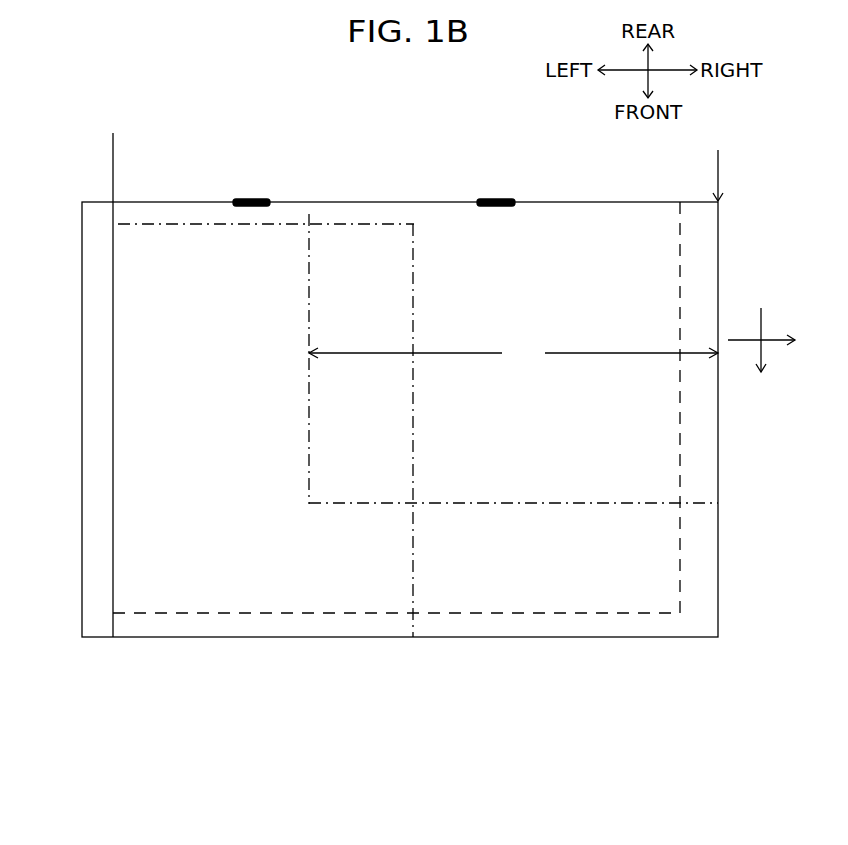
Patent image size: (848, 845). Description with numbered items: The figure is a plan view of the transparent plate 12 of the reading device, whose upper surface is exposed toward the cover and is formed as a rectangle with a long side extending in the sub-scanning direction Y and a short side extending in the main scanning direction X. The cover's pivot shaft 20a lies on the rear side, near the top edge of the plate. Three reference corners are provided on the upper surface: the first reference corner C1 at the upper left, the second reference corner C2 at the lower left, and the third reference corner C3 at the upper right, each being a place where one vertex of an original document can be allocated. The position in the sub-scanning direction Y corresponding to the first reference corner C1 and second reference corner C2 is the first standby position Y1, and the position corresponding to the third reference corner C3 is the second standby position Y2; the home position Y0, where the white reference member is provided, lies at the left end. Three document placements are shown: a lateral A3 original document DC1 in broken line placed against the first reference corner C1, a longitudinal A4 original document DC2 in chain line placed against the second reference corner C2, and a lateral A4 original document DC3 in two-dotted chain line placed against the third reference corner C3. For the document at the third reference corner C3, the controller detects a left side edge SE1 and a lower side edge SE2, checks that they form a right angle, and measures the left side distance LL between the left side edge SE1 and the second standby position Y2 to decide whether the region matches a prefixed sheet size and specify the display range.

The transparent plate 12 is at (540, 245).
The pivot shaft 20a is at (495, 201).
The home position Y0 is at (95, 201).
The first standby position Y1 is at (114, 373).
The second standby position Y2 is at (717, 163).
The first reference corner C1 is at (116, 202).
The second reference corner C2 is at (115, 638).
The third reference corner C3 is at (720, 202).
The left side distance LL is at (513, 354).
The left side edge SE1 is at (309, 397).
The lower side edge SE2 is at (625, 505).
The lateral A3 original document DC1 is at (535, 612).
The longitudinal A4 original document DC2 is at (416, 584).
The lateral A4 original document DC3 is at (502, 505).
The main scanning direction X is at (760, 357).
The sub-scanning direction Y is at (778, 340).